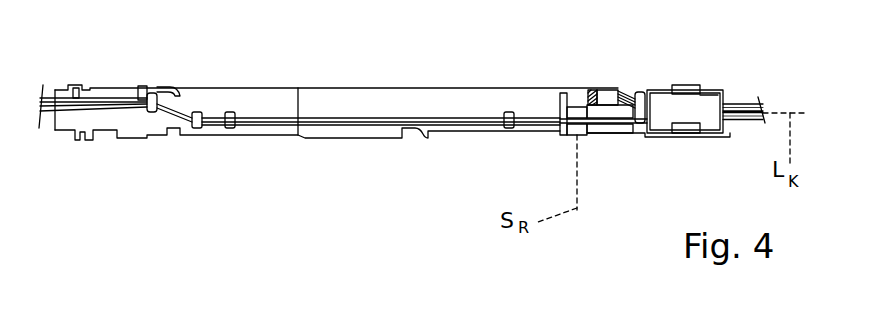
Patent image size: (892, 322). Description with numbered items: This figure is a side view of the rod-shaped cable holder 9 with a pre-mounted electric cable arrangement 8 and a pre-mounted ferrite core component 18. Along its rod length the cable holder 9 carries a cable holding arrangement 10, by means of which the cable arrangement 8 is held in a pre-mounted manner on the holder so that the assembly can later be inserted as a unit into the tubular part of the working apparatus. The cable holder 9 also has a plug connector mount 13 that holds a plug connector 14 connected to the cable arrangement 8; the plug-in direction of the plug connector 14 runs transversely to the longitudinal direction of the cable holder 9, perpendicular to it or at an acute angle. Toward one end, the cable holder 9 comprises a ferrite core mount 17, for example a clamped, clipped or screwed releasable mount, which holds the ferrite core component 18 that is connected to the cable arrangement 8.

The electric cable arrangement 8 is at (105, 108).
The cable holder 9 is at (328, 88).
The cable holding arrangement 10 is at (230, 112).
The plug connector mount 13 is at (560, 105).
The plug connector 14 is at (582, 133).
The ferrite core mount 17 is at (710, 135).
The ferrite core component 18 is at (708, 98).